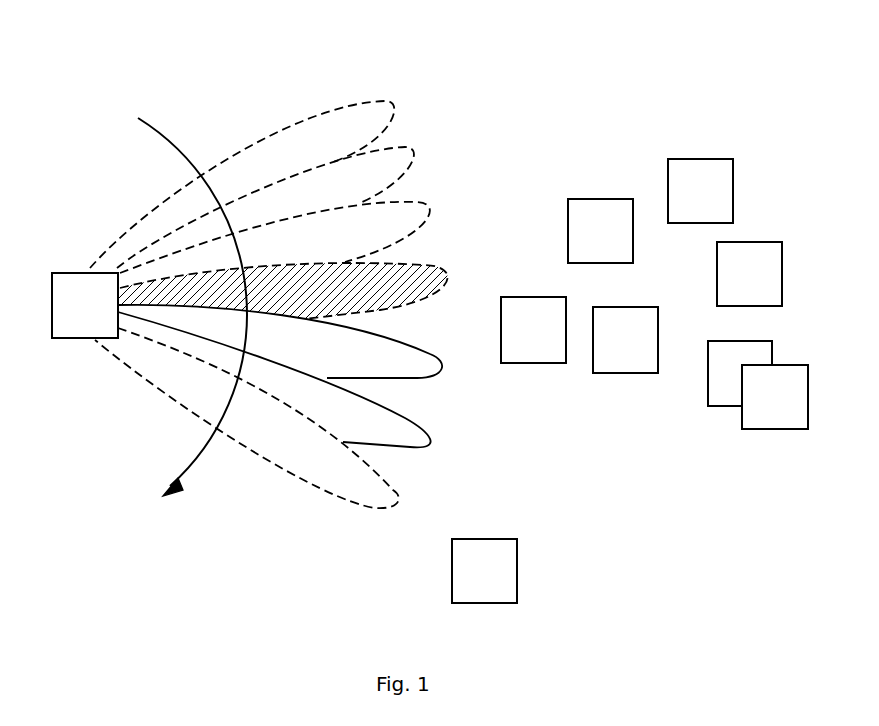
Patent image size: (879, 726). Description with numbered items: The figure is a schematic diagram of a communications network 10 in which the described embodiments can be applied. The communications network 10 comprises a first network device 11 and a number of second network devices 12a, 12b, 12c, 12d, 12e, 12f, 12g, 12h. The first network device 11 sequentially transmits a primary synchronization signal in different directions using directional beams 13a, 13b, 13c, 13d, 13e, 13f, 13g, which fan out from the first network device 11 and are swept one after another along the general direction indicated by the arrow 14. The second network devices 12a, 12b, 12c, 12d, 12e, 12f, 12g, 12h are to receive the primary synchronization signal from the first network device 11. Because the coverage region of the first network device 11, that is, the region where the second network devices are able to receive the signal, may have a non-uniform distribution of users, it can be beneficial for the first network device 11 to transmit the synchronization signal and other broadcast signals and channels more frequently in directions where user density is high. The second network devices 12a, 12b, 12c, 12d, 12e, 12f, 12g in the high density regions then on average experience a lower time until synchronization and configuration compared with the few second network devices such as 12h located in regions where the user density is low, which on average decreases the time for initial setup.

The communications network 10 is at (137, 85).
The first network device 11 is at (72, 296).
The second network device 12a is at (700, 181).
The second network device 12b is at (592, 223).
The second network device 12c is at (540, 322).
The second network device 12d is at (758, 260).
The second network device 12e is at (618, 347).
The second network device 12f is at (718, 398).
The second network device 12g is at (767, 419).
The second network device 12h is at (498, 570).
The directional beam 13a is at (361, 126).
The directional beam 13b is at (322, 178).
The directional beam 13c is at (387, 223).
The directional beam 13d is at (423, 267).
The directional beam 13e is at (410, 347).
The directional beam 13f is at (385, 430).
The directional beam 13g is at (285, 447).
The arrow 14 is at (198, 461).